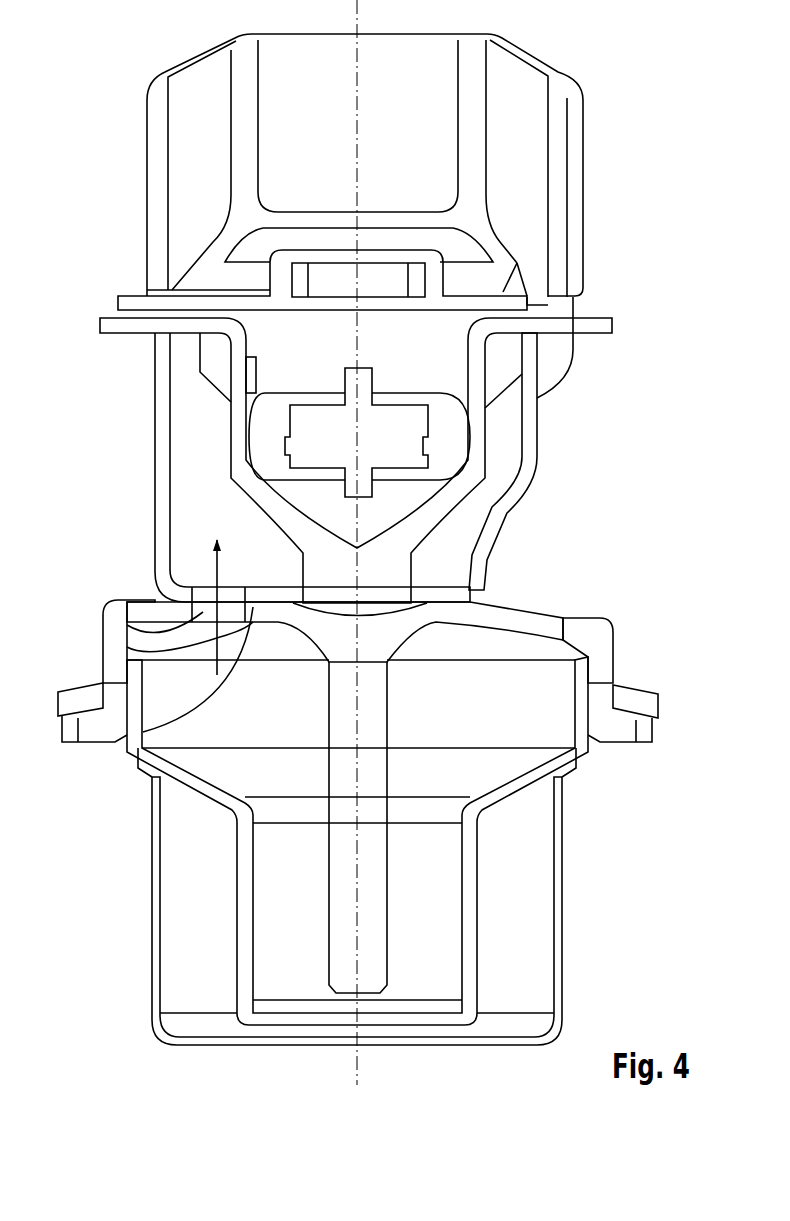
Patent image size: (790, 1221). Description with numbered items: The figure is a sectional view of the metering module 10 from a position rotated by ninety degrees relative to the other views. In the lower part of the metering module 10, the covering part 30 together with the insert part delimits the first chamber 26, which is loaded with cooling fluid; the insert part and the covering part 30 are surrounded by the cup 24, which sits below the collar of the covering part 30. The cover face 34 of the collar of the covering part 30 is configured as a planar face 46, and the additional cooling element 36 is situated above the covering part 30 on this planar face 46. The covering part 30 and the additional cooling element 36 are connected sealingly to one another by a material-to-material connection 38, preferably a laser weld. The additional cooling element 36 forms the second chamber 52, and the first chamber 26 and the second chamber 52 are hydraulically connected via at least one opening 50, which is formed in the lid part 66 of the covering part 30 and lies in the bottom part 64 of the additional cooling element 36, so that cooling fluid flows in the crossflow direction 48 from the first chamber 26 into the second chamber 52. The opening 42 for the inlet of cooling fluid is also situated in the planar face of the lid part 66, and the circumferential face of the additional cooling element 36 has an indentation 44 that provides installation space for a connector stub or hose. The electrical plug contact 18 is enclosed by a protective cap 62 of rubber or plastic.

The metering module 10 is at (589, 403).
The electrical plug contact 18 is at (320, 430).
The cup 24 is at (562, 912).
The first chamber 26 is at (530, 690).
The covering part 30 is at (103, 680).
The cover face 34 is at (335, 450).
The additional cooling element 36 is at (160, 447).
The material-to-material connection 38 is at (455, 617).
The cooling fluid inlet opening 42 is at (550, 616).
The indentation 44 is at (532, 503).
The planar face 46 is at (140, 600).
The crossflow direction 48 is at (125, 652).
The opening 50 is at (127, 623).
The second chamber 52 is at (197, 493).
The protective cap 62 is at (540, 140).
The bottom part 64 is at (445, 598).
The lid part 66 is at (130, 742).